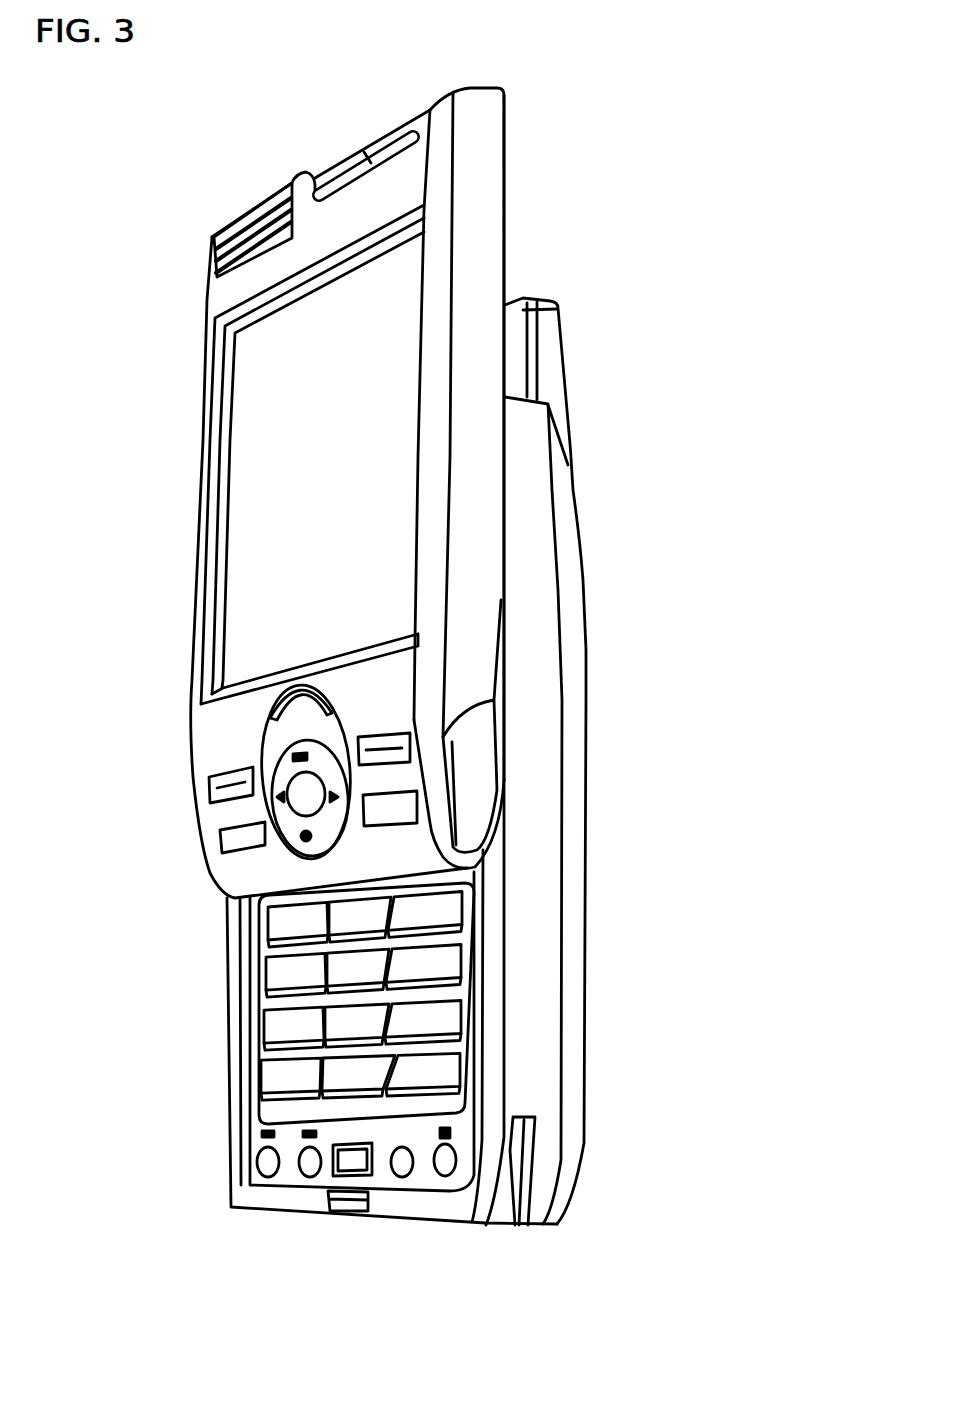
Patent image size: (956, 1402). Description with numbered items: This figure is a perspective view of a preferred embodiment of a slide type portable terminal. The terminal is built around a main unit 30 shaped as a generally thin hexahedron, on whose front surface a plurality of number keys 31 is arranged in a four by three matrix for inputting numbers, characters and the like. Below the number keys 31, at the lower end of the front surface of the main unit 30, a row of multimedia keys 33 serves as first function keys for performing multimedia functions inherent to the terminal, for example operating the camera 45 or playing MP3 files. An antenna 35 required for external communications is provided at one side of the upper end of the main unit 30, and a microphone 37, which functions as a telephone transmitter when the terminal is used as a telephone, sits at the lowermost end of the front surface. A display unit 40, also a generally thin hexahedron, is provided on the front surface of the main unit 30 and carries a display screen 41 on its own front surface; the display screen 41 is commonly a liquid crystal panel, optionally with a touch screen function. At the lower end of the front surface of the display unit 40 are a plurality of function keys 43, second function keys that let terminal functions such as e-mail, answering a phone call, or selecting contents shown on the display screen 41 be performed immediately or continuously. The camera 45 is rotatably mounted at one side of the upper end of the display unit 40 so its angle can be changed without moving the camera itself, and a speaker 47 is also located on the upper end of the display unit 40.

The main unit 30 is at (528, 835).
The number keys 31 is at (218, 1092).
The multimedia keys 33 is at (293, 1175).
The antenna 35 is at (548, 355).
The microphone 37 is at (338, 1213).
The display unit 40 is at (487, 262).
The display screen 41 is at (242, 444).
The function keys 43 is at (222, 840).
The camera 45 is at (240, 210).
The speaker 47 is at (359, 158).